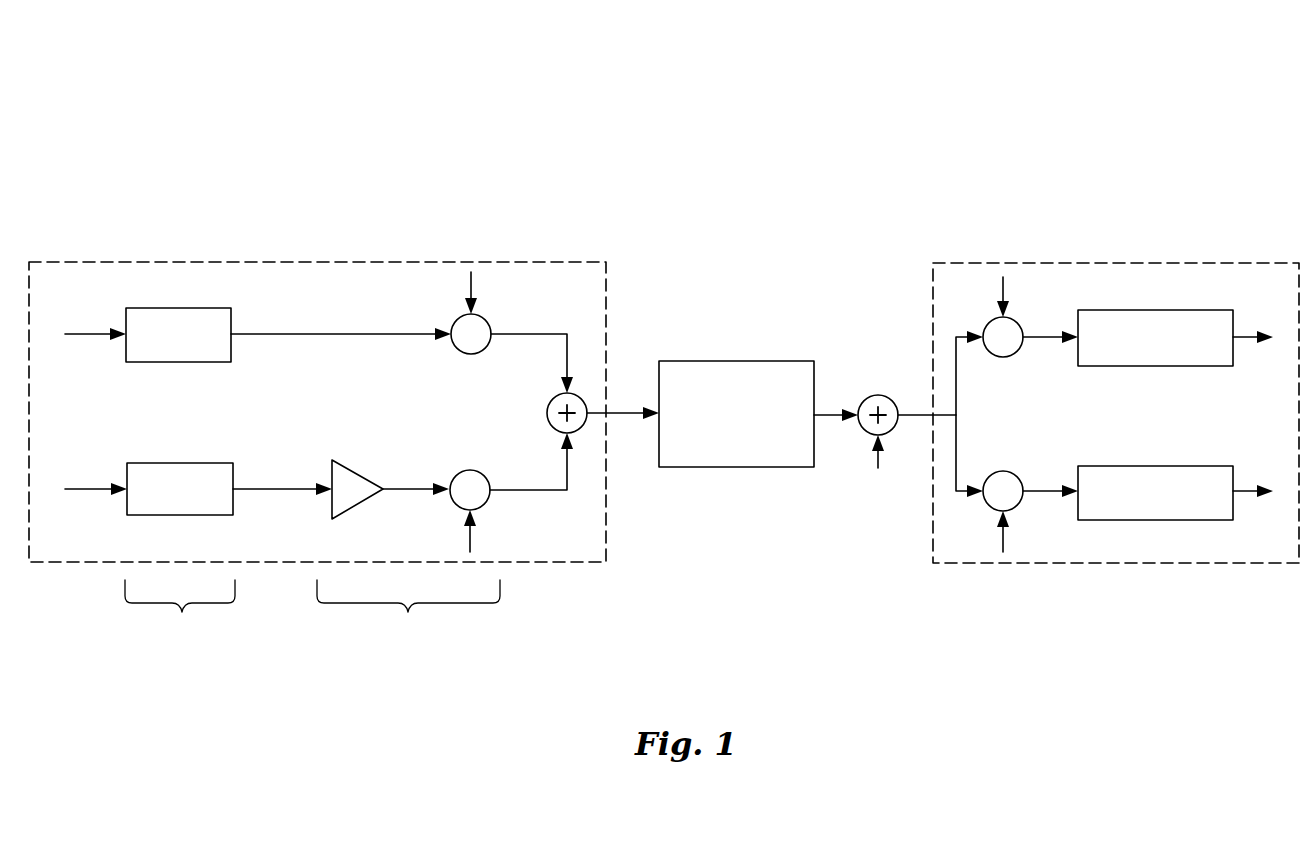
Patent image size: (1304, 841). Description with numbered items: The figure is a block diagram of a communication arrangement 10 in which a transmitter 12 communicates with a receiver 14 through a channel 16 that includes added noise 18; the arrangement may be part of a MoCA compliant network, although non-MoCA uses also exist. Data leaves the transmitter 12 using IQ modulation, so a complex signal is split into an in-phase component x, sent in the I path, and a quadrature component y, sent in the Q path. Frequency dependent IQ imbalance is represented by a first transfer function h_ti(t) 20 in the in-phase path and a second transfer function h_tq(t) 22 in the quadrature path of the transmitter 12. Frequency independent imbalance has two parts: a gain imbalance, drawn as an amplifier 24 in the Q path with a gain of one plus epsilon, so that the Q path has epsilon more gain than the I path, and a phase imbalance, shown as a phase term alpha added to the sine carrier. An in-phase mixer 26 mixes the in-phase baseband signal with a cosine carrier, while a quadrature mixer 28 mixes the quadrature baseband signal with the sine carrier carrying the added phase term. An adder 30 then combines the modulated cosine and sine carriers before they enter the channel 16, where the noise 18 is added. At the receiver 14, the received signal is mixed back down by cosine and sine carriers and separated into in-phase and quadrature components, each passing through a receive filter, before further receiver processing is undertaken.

The communication arrangement 10 is at (165, 125).
The transmitter 12 is at (550, 262).
The receiver 14 is at (1250, 263).
The channel 16 is at (768, 361).
The added noise 18 is at (887, 397).
The first transfer function h_ti(t) 20 is at (196, 308).
The second transfer function h_tq(t) 22 is at (204, 515).
The amplifier 24 is at (360, 470).
The in-phase mixer 26 is at (476, 354).
The quadrature mixer 28 is at (474, 470).
The adder 30 is at (547, 413).